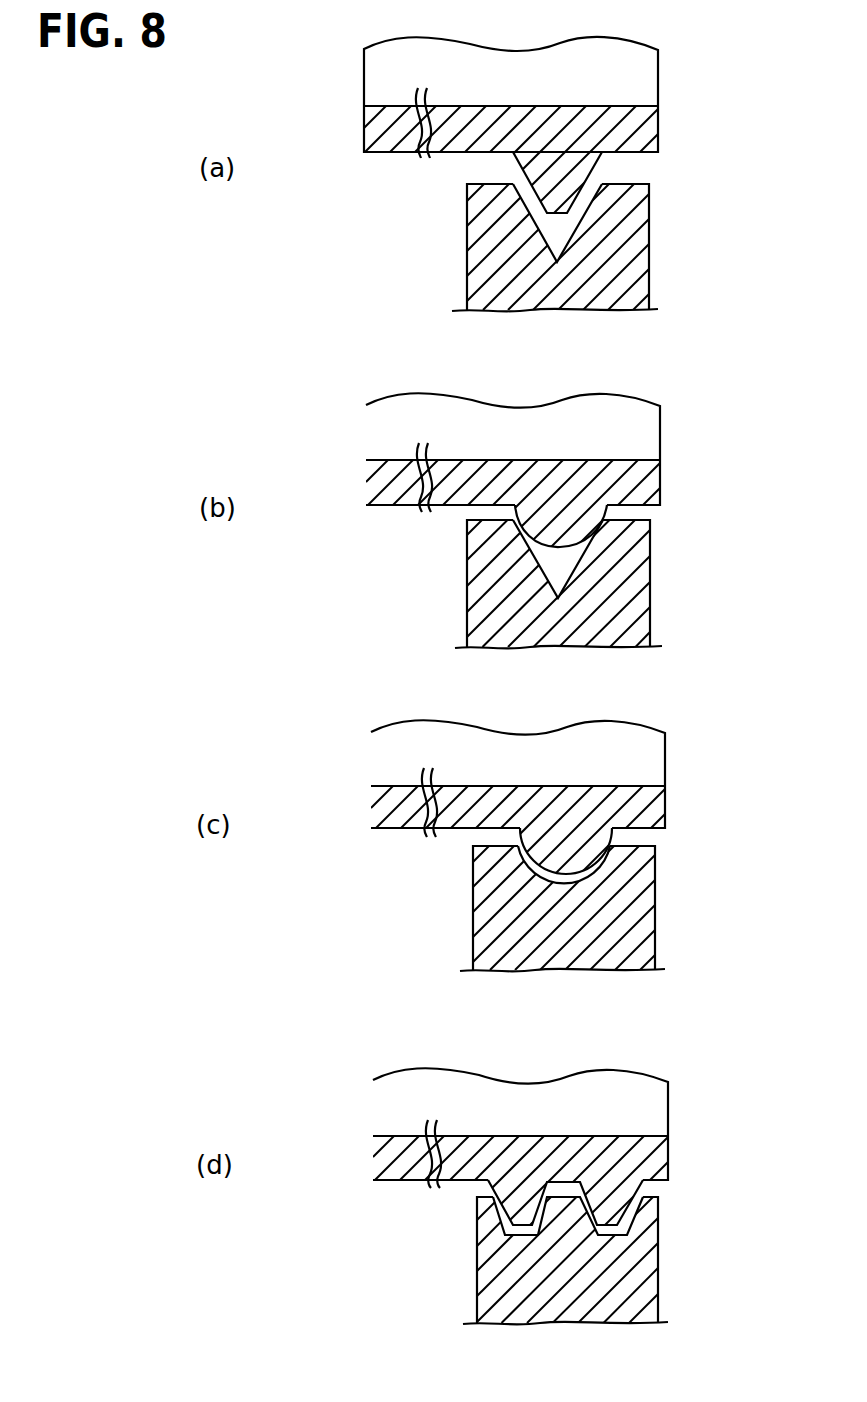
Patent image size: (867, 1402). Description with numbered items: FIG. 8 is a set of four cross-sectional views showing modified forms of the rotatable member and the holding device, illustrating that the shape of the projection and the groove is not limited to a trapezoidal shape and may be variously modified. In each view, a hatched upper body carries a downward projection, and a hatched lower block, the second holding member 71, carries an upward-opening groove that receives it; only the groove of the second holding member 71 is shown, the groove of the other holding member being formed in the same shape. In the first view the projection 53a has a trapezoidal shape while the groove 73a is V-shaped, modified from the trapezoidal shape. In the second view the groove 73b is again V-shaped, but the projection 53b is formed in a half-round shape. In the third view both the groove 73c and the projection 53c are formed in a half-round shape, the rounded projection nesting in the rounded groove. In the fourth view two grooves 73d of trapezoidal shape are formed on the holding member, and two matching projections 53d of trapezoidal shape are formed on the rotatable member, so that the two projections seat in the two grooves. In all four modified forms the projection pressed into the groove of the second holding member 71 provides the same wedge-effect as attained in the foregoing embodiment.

The projection 53a is at (580, 177).
The groove 73a is at (563, 238).
The second holding member 71 is at (600, 577).
The projection 53b is at (588, 517).
The groove 73b is at (565, 573).
The projection 53c is at (572, 845).
The groove 73c is at (592, 870).
The projections 53d is at (523, 1200).
The grooves 73d is at (547, 1213).